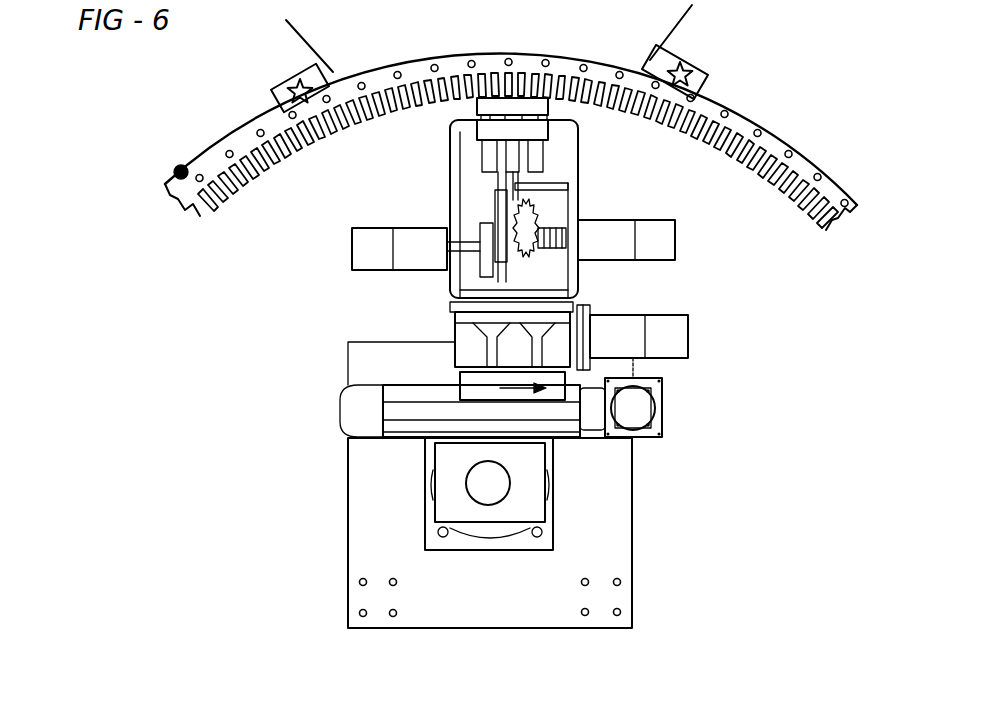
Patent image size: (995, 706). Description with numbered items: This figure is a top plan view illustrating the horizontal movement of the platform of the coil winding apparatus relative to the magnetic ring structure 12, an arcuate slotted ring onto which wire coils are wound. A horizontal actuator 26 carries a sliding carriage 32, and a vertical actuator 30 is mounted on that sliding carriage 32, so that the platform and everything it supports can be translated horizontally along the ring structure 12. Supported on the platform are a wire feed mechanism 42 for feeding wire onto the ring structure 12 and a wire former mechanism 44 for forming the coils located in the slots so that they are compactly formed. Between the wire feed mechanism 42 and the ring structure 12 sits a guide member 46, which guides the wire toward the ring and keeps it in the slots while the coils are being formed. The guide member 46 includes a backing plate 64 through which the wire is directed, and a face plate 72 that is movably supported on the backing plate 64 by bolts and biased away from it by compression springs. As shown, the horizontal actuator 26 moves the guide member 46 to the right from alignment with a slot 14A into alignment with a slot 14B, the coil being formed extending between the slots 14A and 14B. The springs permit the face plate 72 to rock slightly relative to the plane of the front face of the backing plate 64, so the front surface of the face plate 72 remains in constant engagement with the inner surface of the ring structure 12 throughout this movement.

The magnetic ring structure 12 is at (603, 58).
The slot 14A is at (486, 74).
The slot 14B is at (520, 76).
The horizontal actuator 26 is at (631, 436).
The vertical actuator 30 is at (470, 336).
The sliding carriage 32 is at (475, 378).
The wire feed mechanism 42 is at (582, 210).
The wire former mechanism 44 is at (447, 216).
The guide member 46 is at (476, 118).
The backing plate 64 is at (480, 133).
The face plate 72 is at (548, 106).